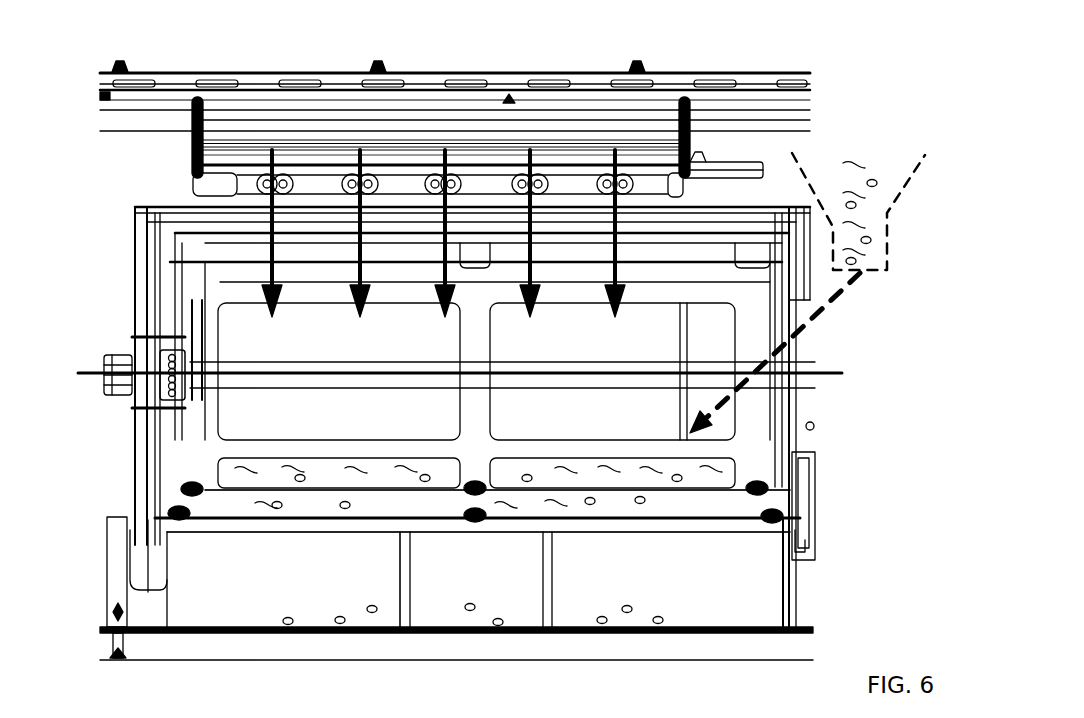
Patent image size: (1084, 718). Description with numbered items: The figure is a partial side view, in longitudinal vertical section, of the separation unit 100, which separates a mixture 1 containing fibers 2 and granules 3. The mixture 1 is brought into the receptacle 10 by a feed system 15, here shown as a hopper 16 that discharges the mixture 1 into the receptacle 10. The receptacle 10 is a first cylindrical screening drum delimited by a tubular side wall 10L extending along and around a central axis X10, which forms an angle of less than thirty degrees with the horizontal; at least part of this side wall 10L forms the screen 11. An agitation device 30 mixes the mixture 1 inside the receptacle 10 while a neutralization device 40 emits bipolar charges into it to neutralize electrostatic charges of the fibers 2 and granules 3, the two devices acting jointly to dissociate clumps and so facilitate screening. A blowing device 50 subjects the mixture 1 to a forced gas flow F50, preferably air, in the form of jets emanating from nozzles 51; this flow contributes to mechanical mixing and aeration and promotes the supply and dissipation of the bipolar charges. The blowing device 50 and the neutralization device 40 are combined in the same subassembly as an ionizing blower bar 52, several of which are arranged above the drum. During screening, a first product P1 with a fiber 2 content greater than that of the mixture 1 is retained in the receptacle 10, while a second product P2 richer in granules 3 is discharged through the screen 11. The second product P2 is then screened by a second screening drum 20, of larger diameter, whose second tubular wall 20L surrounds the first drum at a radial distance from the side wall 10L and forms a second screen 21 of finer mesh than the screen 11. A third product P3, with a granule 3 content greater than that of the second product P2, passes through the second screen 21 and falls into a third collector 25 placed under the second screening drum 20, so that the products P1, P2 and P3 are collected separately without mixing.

The unit 100 is at (155, 185).
The neutralization device 40 is at (258, 148).
The blowing device 50 is at (474, 189).
The nozzles 51 is at (283, 165).
The ionizing blower bar 52 is at (278, 128).
The forced gas flow F50 is at (280, 278).
The receptacle 10 is at (740, 440).
The tubular side wall 10L is at (593, 495).
The screen 11 is at (735, 478).
The feed system 15 is at (872, 130).
The hopper 16 is at (893, 203).
The mixture 1 is at (860, 180).
The fibers 2 is at (863, 253).
The granules 3 is at (873, 240).
The second screening drum 20 is at (502, 577).
The second tubular wall 20L is at (493, 525).
The second screen 21 is at (683, 520).
The third collector 25 is at (790, 608).
The agitation device 30 is at (133, 350).
The central axis X10 is at (310, 377).
The first product P1 is at (290, 480).
The second product P2 is at (337, 507).
The third product P3 is at (363, 620).